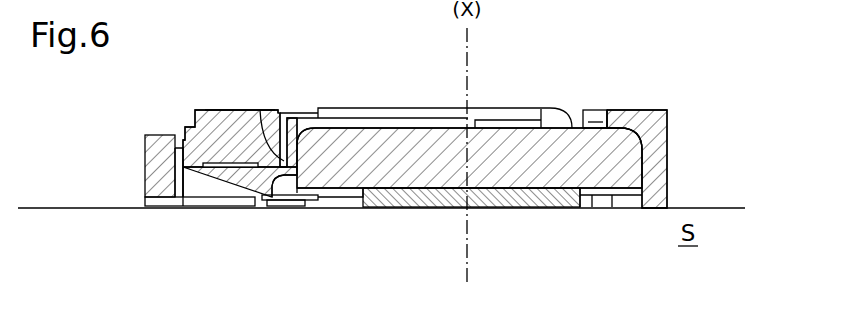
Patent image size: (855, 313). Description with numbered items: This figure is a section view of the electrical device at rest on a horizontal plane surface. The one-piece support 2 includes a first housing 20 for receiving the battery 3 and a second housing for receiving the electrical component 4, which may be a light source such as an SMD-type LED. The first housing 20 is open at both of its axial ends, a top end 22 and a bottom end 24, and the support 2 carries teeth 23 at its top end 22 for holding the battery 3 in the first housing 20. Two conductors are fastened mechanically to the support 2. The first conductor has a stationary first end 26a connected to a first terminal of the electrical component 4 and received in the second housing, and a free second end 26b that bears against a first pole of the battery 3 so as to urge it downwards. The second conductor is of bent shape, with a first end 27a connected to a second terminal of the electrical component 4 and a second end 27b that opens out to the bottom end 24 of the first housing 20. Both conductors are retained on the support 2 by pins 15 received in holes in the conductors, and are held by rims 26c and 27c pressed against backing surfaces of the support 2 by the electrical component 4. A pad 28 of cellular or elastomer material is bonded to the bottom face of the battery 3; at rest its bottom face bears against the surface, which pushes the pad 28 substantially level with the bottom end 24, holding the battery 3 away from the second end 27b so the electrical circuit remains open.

The support 2 is at (668, 148).
The battery 3 is at (561, 172).
The electrical component 4 is at (197, 112).
The pins 15 is at (315, 108).
The first housing 20 is at (263, 198).
The top end 22 is at (613, 110).
The teeth 23 is at (650, 110).
The bottom end 24 is at (488, 208).
The stationary first end 26a is at (238, 110).
The free second end 26b is at (472, 120).
The rim 26c is at (258, 110).
The first end 27a is at (145, 157).
The second end 27b is at (307, 205).
The rim 27c is at (145, 198).
The pad 28 is at (380, 208).